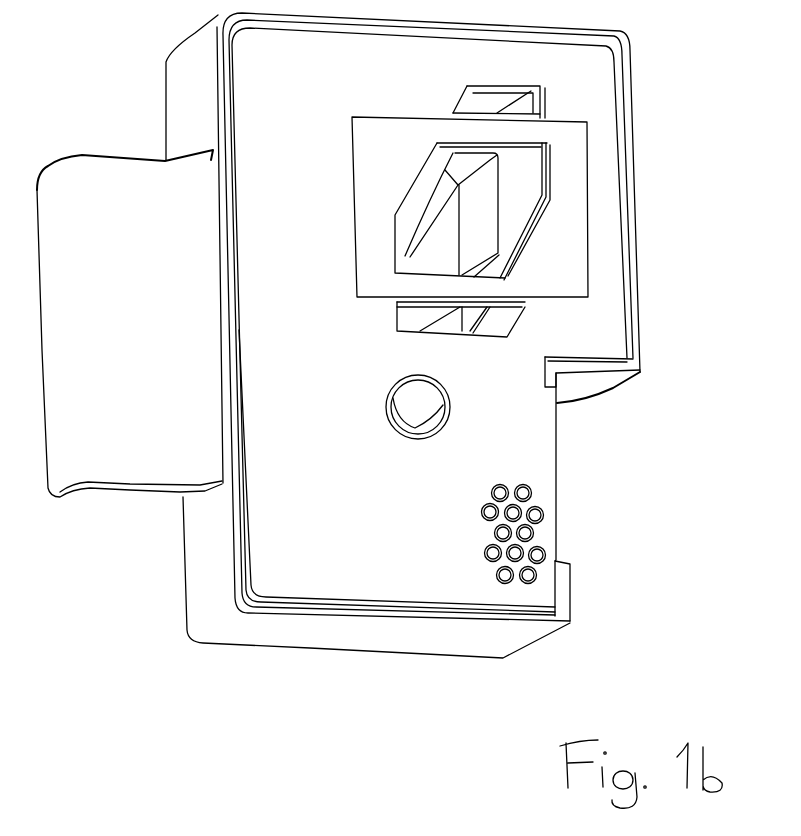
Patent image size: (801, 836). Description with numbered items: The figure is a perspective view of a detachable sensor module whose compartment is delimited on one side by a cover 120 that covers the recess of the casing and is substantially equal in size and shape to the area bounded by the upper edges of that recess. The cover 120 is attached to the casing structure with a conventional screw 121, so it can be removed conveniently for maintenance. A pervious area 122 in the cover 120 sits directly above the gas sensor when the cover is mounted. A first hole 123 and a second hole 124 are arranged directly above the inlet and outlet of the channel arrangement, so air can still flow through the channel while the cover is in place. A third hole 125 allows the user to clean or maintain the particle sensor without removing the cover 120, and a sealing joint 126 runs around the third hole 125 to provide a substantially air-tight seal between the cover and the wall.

The cover 120 is at (597, 82).
The screw 121 is at (536, 423).
The pervious area 122 is at (540, 537).
The first hole 123 is at (412, 327).
The second hole 124 is at (477, 103).
The third hole 125 is at (517, 192).
The sealing joint 126 is at (570, 275).